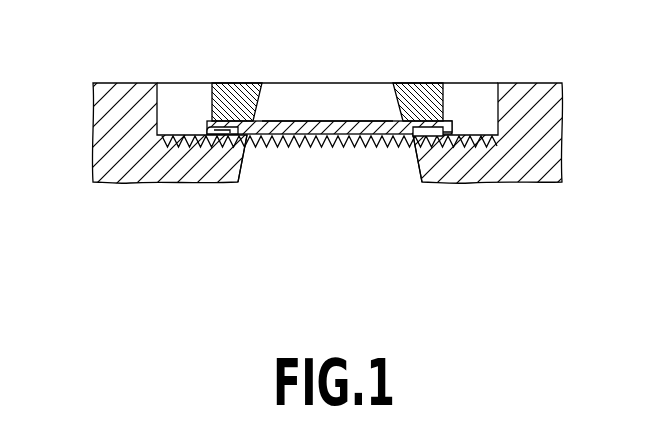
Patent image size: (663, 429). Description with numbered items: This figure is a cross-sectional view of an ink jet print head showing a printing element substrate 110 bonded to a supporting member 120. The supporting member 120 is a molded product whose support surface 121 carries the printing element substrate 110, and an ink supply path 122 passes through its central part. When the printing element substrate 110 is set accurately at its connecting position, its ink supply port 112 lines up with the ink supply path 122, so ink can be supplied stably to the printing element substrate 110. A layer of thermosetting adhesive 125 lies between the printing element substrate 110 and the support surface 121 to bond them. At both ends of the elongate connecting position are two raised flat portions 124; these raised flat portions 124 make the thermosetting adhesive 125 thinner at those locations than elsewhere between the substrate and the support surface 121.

The printing element substrate 110 is at (423, 95).
The ink supply port 112 is at (325, 105).
The supporting member 120 is at (517, 103).
The support surface 121 is at (342, 150).
The ink supply path 122 is at (282, 175).
The raised flat portion 124 is at (207, 130).
The thermosetting adhesive 125 is at (375, 128).